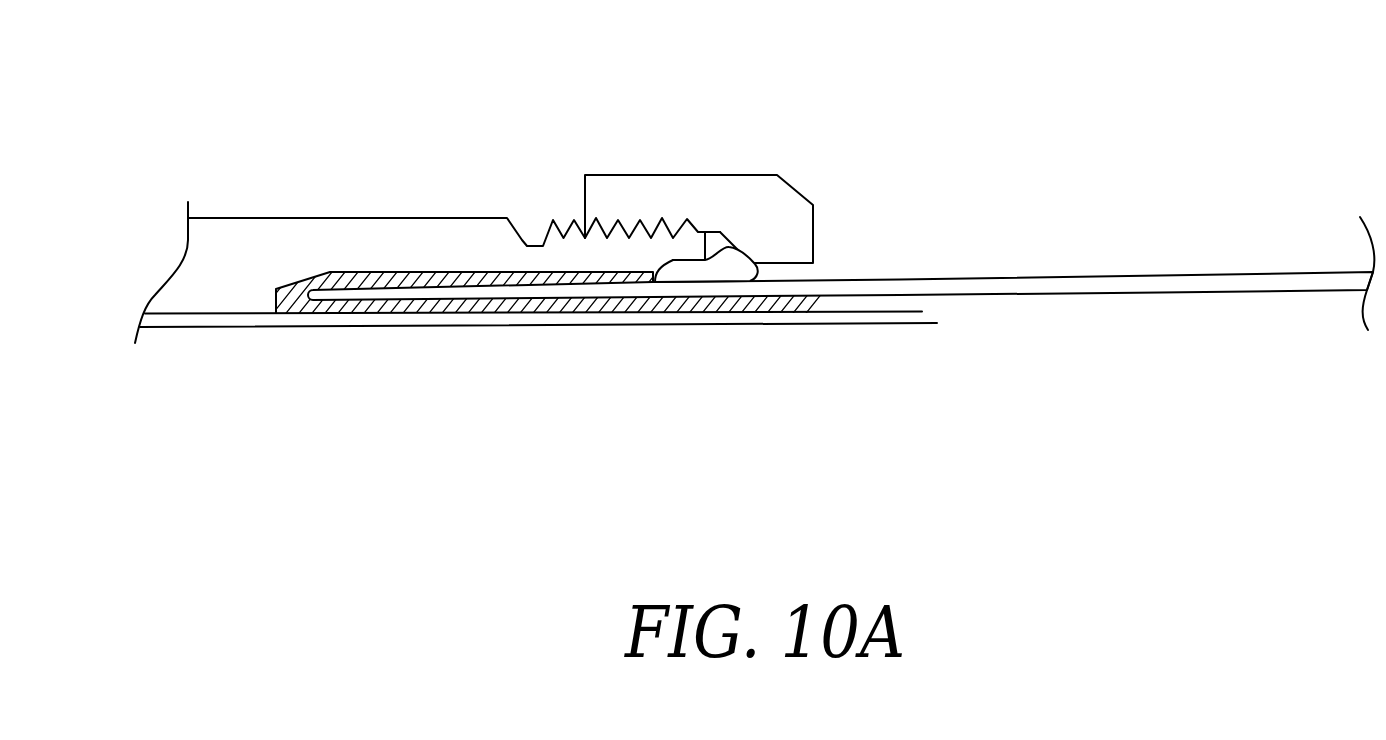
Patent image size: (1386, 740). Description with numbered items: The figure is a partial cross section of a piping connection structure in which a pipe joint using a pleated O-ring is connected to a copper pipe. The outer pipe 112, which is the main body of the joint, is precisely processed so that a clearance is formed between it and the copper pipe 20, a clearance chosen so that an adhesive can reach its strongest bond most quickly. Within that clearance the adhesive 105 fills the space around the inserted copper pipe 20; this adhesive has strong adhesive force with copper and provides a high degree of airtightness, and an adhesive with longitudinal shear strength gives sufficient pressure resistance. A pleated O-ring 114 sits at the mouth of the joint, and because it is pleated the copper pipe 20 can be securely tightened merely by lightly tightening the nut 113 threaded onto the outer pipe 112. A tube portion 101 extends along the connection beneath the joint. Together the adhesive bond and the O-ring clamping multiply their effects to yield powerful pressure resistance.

The pipe 20 is at (1110, 275).
The tube portion 101 is at (842, 325).
The adhesive 105 is at (462, 303).
The outer pipe 112 is at (436, 240).
The nut 113 is at (742, 194).
The O-ring 114 is at (742, 265).